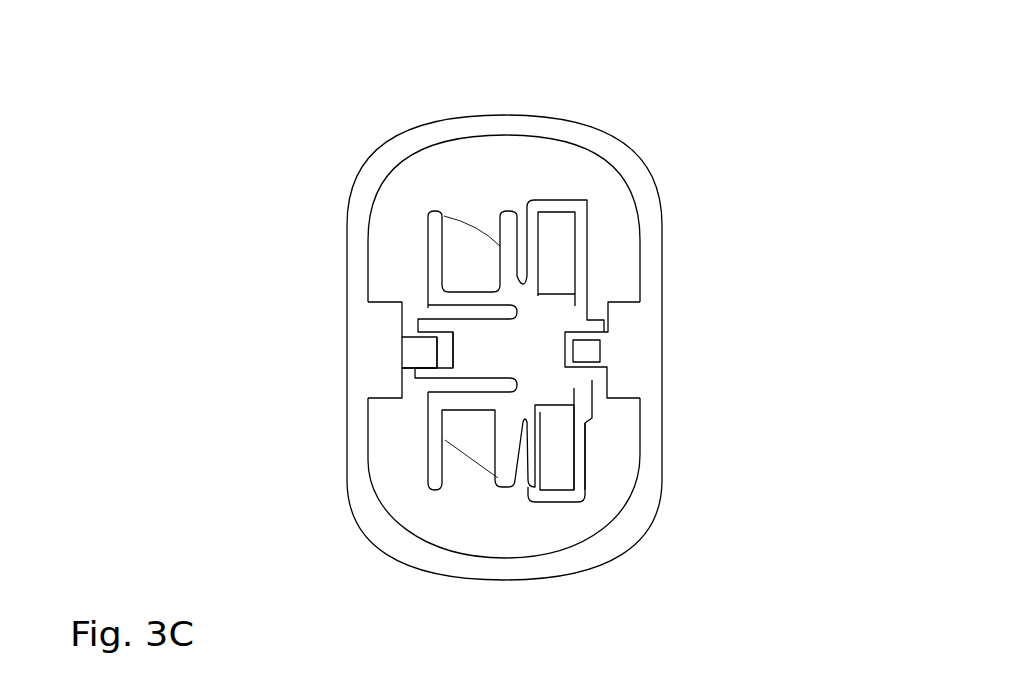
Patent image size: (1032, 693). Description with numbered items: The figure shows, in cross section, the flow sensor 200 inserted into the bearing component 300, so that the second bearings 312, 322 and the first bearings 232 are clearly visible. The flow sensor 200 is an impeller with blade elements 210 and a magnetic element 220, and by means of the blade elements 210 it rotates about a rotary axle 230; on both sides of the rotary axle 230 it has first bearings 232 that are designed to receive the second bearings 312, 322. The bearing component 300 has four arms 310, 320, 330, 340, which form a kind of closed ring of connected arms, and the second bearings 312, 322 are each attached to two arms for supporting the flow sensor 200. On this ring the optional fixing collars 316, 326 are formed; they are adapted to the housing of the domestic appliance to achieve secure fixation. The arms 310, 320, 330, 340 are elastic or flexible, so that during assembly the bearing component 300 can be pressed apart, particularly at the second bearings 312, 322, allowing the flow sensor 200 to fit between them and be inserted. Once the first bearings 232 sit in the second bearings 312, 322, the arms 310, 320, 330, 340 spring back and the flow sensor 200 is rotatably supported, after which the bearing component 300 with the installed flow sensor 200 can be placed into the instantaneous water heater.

The flow sensor 200 is at (470, 180).
The blade elements 210 is at (453, 223).
The magnetic element 220 is at (550, 463).
The rotary axle 230 is at (312, 345).
The first bearings 232 is at (580, 326).
The bearing component 300 is at (662, 118).
The arm 310 is at (365, 483).
The second bearing 312 is at (427, 347).
The fixing collar 316 is at (378, 315).
The arm 320 is at (615, 528).
The second bearing 322 is at (590, 352).
The fixing collar 326 is at (618, 338).
The arm 330 is at (430, 130).
The arm 340 is at (642, 195).